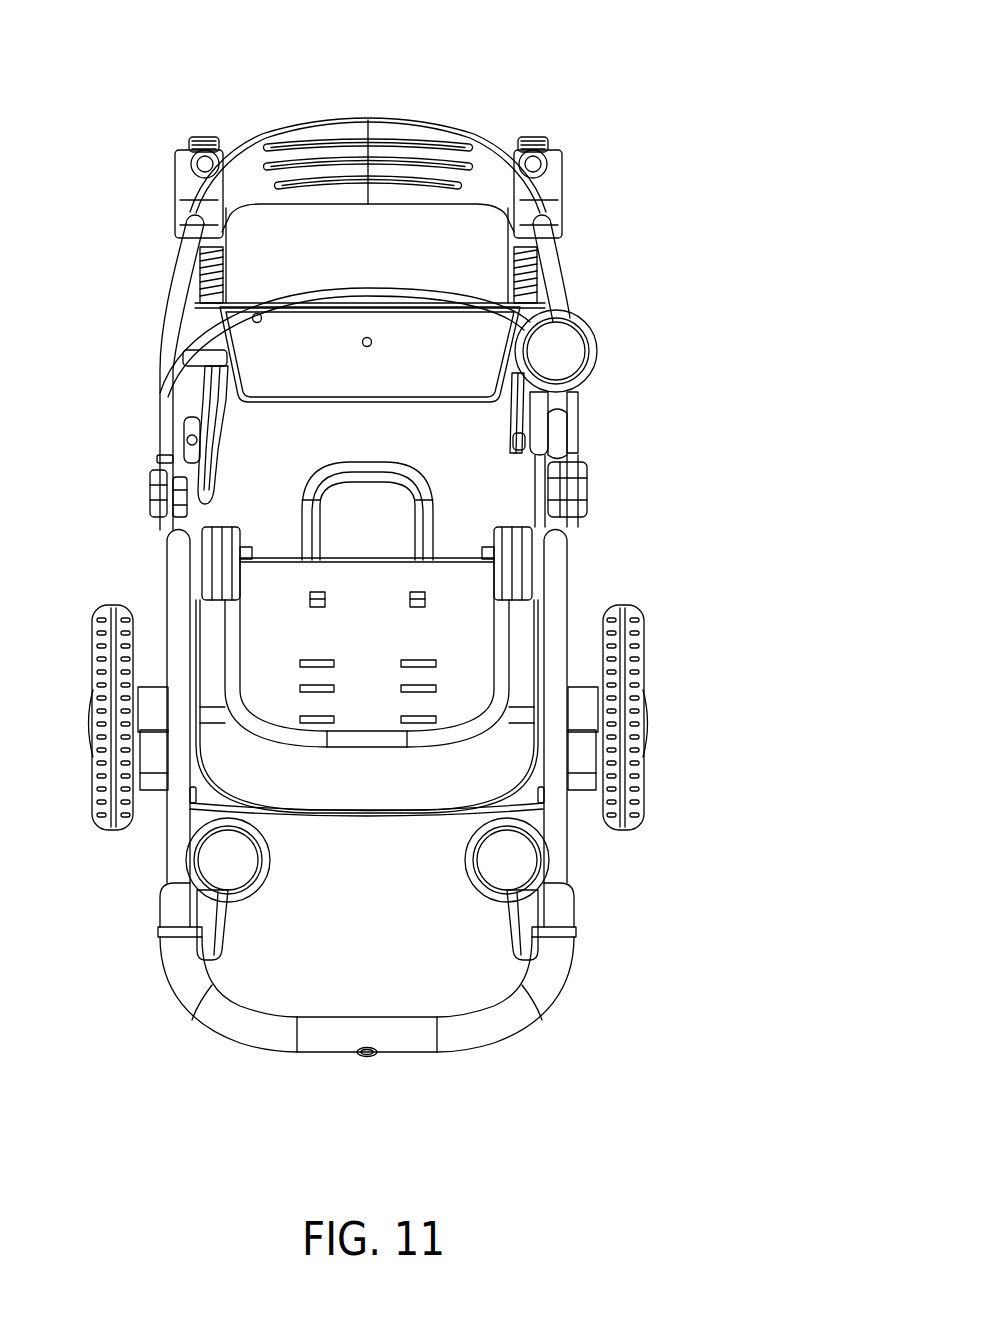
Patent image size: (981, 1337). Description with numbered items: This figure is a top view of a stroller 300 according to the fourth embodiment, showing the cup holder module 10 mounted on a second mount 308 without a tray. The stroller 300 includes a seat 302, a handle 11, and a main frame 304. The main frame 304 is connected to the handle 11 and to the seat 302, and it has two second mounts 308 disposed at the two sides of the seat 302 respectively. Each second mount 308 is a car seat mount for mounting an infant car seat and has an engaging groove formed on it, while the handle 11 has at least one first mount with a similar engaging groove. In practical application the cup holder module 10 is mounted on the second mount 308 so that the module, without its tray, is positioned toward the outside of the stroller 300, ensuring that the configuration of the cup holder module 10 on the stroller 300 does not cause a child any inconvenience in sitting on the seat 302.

The stroller 300 is at (592, 78).
The main frame 304 is at (563, 273).
The second mount 308 is at (228, 415).
The seat 302 is at (468, 617).
The cup holder module 10 is at (599, 340).
The handle 11 is at (555, 980).